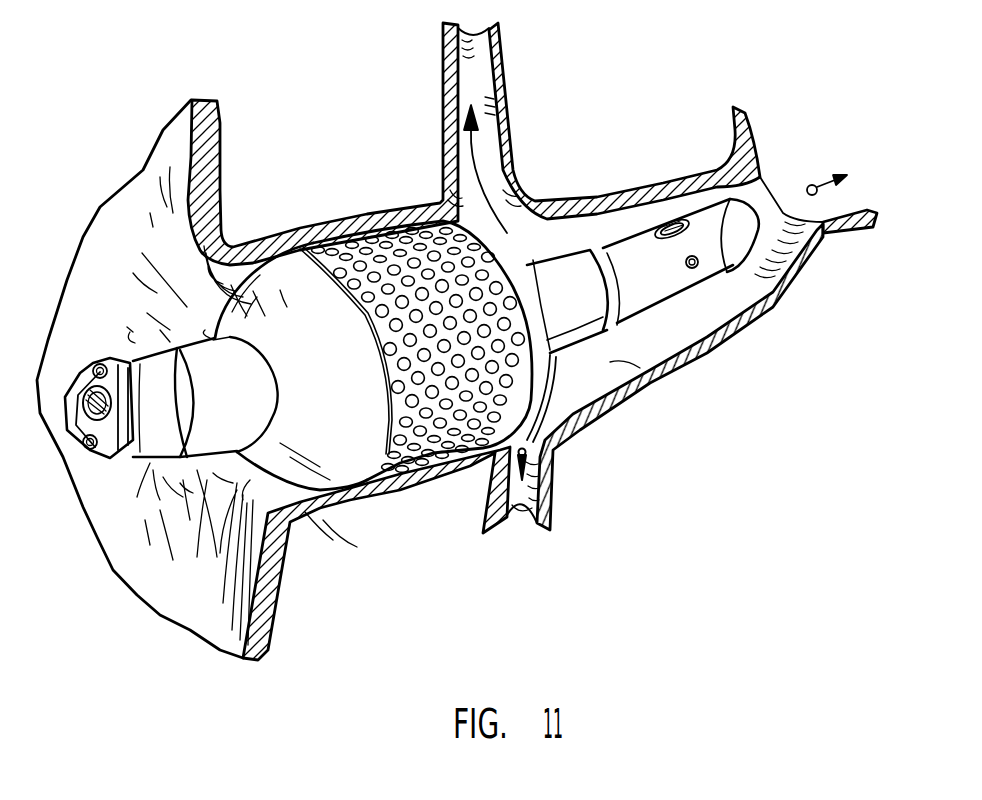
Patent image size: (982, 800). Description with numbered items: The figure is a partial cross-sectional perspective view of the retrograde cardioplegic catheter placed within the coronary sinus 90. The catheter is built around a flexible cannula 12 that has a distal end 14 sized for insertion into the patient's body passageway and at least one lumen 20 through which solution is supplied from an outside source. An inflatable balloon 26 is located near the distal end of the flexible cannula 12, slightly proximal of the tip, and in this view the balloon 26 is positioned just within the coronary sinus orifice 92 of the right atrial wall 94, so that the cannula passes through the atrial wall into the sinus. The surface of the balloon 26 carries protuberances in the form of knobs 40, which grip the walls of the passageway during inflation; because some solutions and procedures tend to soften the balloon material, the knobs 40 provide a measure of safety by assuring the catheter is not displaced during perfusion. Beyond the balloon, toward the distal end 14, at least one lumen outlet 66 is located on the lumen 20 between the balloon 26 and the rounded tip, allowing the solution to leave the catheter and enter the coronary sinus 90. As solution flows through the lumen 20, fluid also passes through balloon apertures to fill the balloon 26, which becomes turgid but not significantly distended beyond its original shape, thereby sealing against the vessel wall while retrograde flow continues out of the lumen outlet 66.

The flexible cannula 12 is at (150, 422).
The distal end 14 is at (743, 213).
The lumen 20 is at (87, 463).
The inflatable balloon 26 is at (290, 300).
The knobs 40 is at (397, 247).
The lumen outlet 66 is at (669, 221).
The coronary sinus 90 is at (640, 368).
The coronary sinus orifice 92 is at (307, 500).
The right atrial wall 94 is at (190, 583).